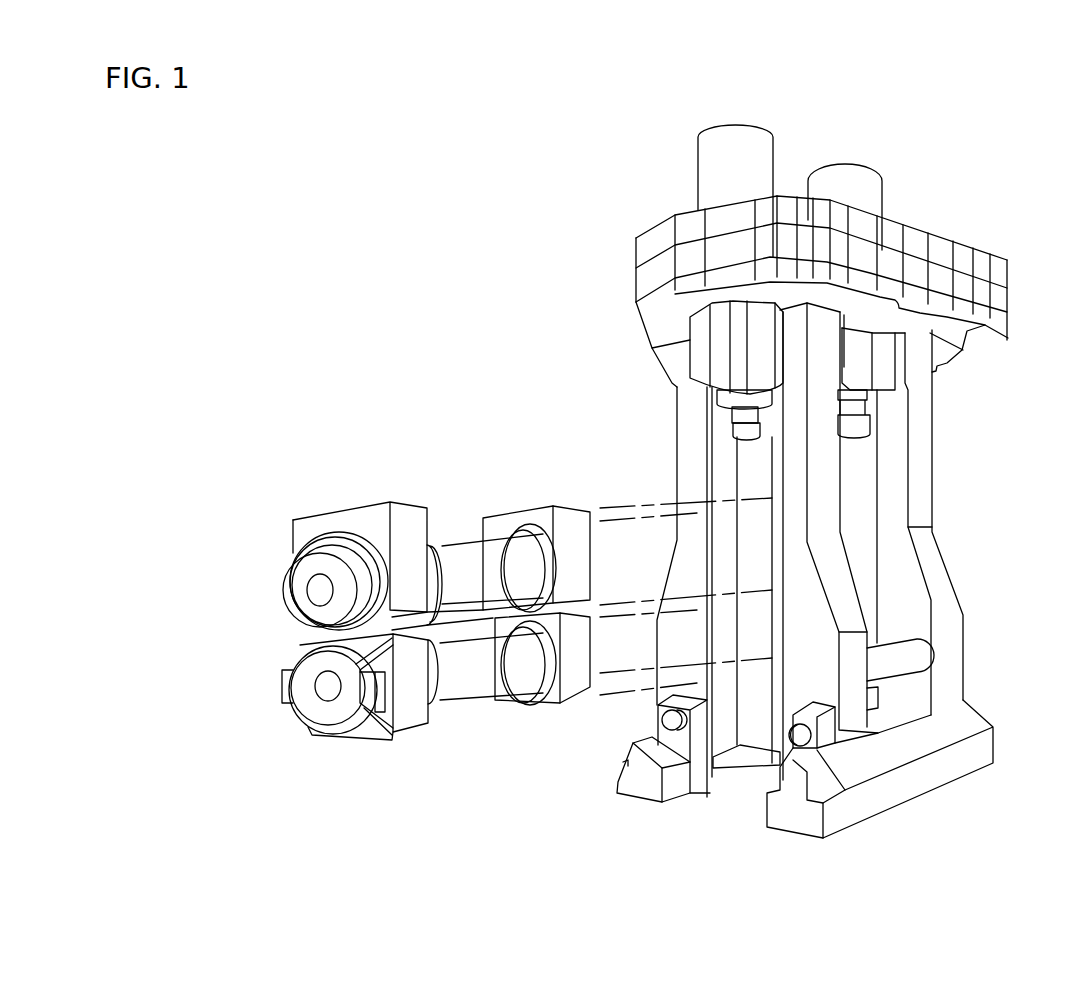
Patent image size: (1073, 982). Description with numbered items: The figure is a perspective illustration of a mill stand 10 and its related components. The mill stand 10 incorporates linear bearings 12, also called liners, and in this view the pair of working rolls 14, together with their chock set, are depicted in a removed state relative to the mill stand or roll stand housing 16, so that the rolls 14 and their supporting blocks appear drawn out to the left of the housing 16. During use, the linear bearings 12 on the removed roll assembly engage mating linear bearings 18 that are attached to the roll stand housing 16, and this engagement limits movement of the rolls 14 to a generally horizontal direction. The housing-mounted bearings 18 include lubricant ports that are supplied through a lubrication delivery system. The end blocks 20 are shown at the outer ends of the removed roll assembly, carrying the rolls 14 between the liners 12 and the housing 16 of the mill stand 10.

The mill stand 10 is at (1068, 182).
The linear bearings 12 is at (573, 567).
The working rolls 14 is at (463, 550).
The roll stand housing 16 is at (970, 775).
The linear bearings 18 is at (722, 457).
The end block 20 is at (298, 520).